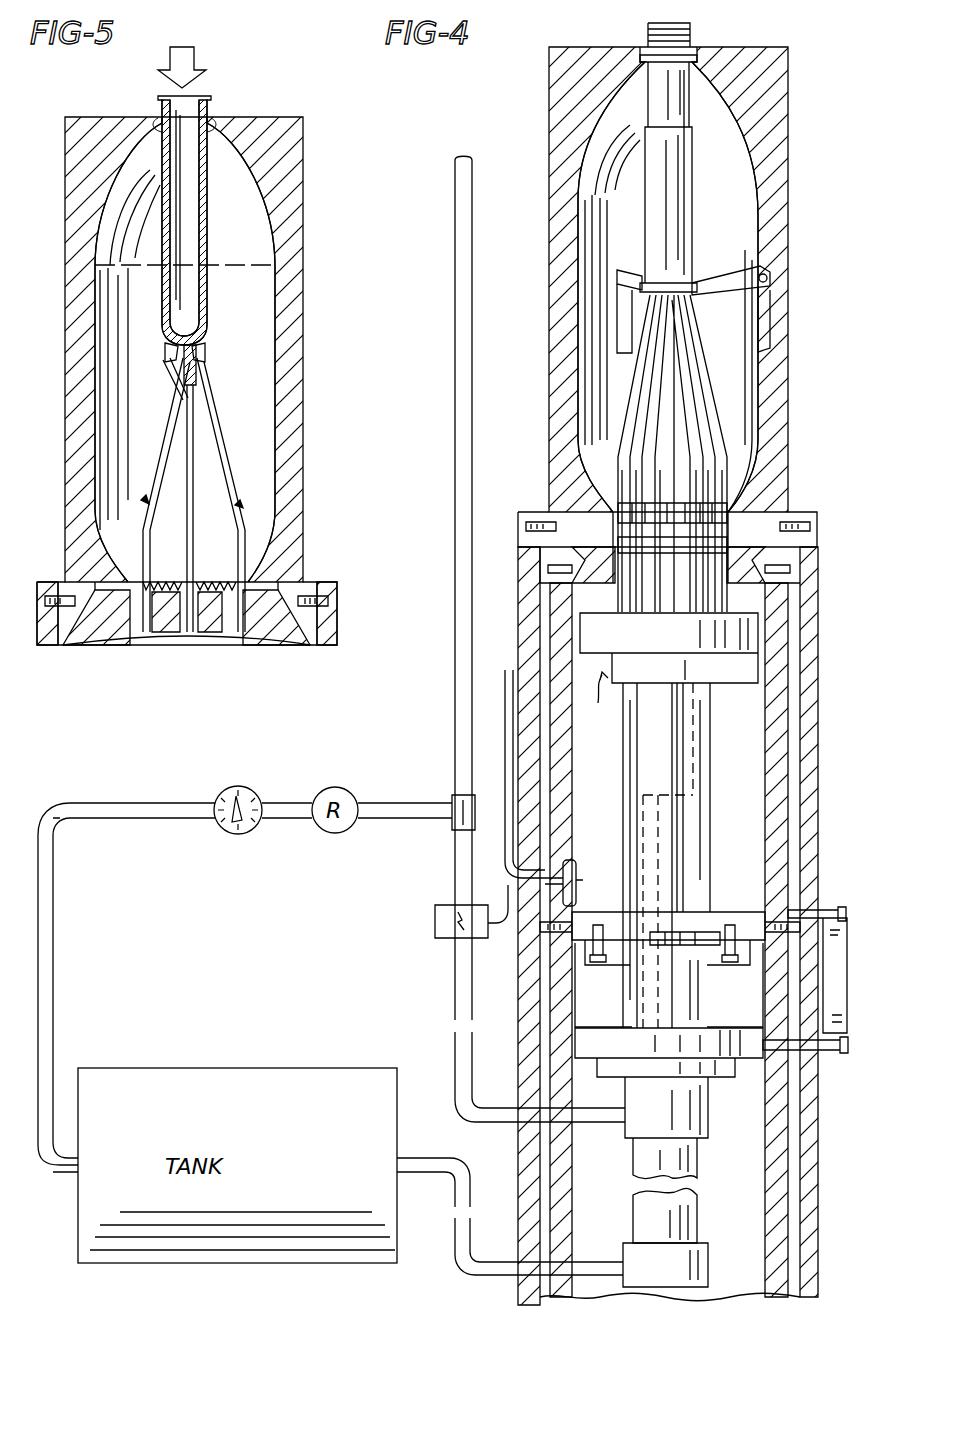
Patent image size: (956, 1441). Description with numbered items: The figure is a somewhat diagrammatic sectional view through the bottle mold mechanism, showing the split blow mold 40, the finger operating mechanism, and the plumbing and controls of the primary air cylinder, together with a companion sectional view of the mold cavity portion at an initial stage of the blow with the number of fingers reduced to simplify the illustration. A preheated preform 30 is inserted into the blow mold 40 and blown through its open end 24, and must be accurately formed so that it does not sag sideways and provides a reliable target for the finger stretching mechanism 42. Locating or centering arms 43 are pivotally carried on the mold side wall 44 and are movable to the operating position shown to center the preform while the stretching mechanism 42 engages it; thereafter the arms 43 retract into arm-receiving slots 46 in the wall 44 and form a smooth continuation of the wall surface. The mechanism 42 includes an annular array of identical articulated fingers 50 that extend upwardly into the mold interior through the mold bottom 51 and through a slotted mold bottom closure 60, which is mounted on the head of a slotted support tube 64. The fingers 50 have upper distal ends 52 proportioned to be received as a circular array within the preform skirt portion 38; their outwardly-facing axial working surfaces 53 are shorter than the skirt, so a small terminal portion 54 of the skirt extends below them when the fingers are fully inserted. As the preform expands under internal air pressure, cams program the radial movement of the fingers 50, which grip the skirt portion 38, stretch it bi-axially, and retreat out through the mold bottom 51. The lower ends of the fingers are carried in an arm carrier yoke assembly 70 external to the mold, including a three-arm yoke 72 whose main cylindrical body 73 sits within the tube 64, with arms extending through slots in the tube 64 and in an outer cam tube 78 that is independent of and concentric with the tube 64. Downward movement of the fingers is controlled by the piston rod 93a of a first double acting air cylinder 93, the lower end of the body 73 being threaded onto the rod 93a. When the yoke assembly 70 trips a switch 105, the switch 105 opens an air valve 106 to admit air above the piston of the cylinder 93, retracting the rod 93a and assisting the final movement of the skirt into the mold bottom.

In FIG. 5, the open end 24 is at (212, 100).
In FIG. 5, the preform 30 is at (220, 252).
In FIG. 4, the preform 30 is at (710, 214).
In FIG. 5, the preform skirt portion 38 is at (210, 378).
In FIG. 5, the split blow mold 40 is at (305, 218).
In FIG. 4, the split blow mold 40 is at (790, 128).
In FIG. 5, the finger stretching mechanism 42 is at (258, 507).
In FIG. 4, the finger stretching mechanism 42 is at (746, 440).
In FIG. 4, the locating arms 43 is at (750, 262).
In FIG. 4, the mold side wall 44 is at (778, 380).
In FIG. 4, the arm-receiving slots 46 is at (772, 310).
In FIG. 5, the articulated fingers 50 is at (256, 462).
In FIG. 4, the articulated fingers 50 is at (632, 408).
In FIG. 5, the mold bottom 51 is at (272, 575).
In FIG. 4, the mold bottom 51 is at (790, 500).
In FIG. 5, the upper distal ends 52 is at (205, 350).
In FIG. 5, the axial working surfaces 53 is at (164, 341).
In FIG. 5, the terminal portion of skirt 54 is at (172, 366).
In FIG. 5, the slotted mold bottom closure 60 is at (205, 636).
In FIG. 4, the slotted mold bottom closure 60 is at (616, 508).
In FIG. 4, the slotted support tube 64 is at (690, 998).
In FIG. 4, the arm carrier yoke assembly 70 is at (593, 703).
In FIG. 4, the three-arm yoke 72 is at (760, 672).
In FIG. 4, the main cylindrical body 73 is at (712, 728).
In FIG. 4, the outer cam tube 78 is at (706, 862).
In FIG. 4, the first double acting air cylinder 93 is at (700, 1160).
In FIG. 4, the piston rod 93a is at (650, 842).
In FIG. 4, the switch 105 is at (588, 875).
In FIG. 4, the air valve 106 is at (435, 924).